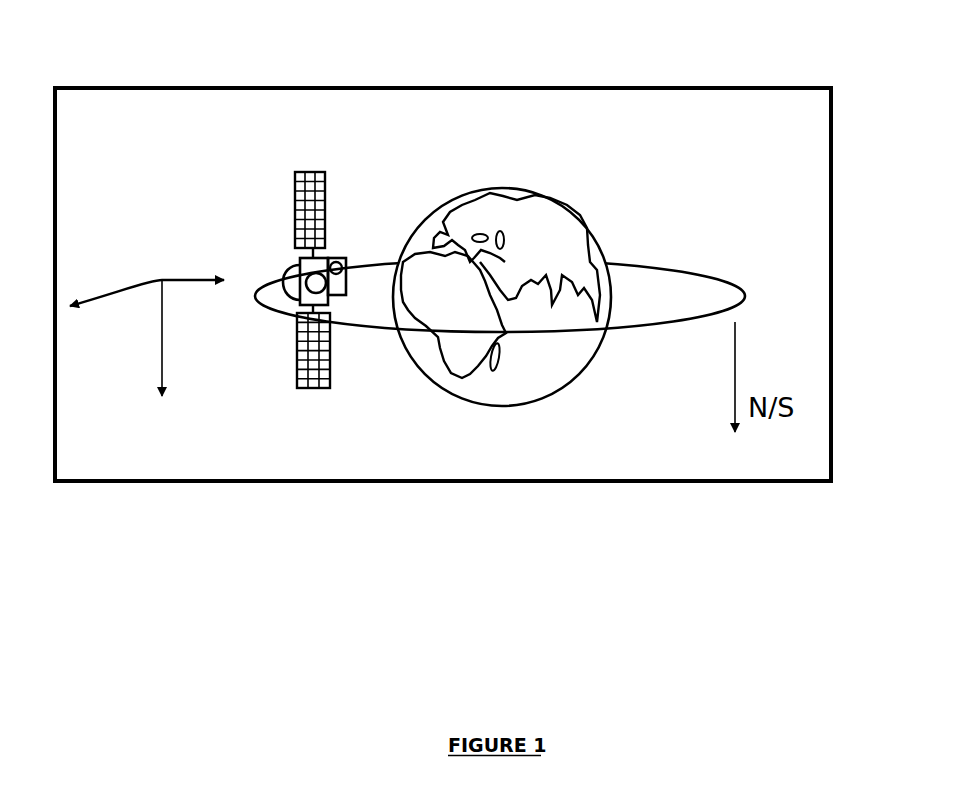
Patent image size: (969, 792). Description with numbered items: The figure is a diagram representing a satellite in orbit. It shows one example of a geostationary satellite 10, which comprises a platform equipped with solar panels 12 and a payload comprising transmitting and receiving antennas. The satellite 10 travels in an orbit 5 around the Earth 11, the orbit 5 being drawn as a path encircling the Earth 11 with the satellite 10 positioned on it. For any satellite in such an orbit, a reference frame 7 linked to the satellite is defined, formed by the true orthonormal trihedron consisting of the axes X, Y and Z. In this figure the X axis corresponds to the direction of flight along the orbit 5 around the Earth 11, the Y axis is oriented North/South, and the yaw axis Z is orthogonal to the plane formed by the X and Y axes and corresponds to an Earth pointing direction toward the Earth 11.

The orbit 5 is at (712, 272).
The reference frame 7 is at (161, 259).
The geostationary satellite 10 is at (302, 287).
The Earth 11 is at (532, 223).
The solar panels 12 is at (333, 228).